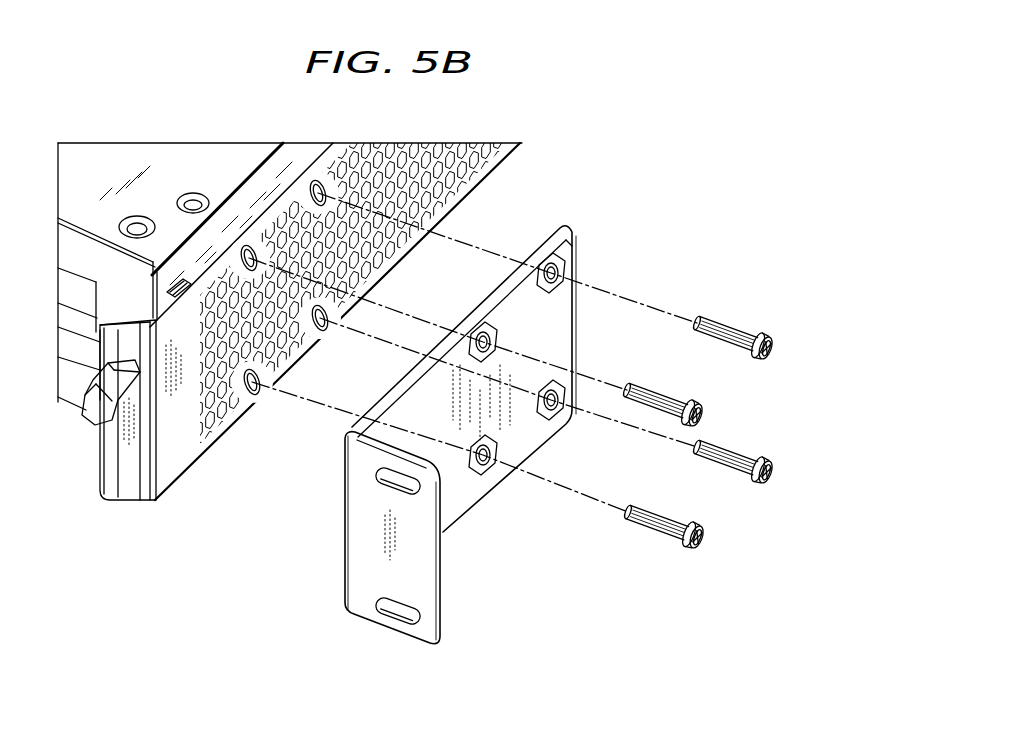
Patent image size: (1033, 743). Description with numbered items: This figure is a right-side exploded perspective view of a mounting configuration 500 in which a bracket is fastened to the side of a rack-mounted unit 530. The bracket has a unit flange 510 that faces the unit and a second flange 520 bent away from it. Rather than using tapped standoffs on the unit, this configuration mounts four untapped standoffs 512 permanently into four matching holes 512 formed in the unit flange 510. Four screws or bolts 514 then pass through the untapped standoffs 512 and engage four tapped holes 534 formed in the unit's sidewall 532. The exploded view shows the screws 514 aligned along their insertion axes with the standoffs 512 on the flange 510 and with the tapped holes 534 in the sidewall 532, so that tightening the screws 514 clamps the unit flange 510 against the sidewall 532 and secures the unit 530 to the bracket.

The rack mounting assembly 500 is at (530, 418).
The unit flange 510 is at (497, 379).
The untapped standoffs 512 is at (558, 278).
The screws/bolts 514 is at (770, 347).
The bracket flange 520 is at (418, 562).
The chassis rail ear with latch 530 is at (128, 504).
The unit sidewall 532 is at (180, 458).
The tapped holes 534 is at (325, 330).